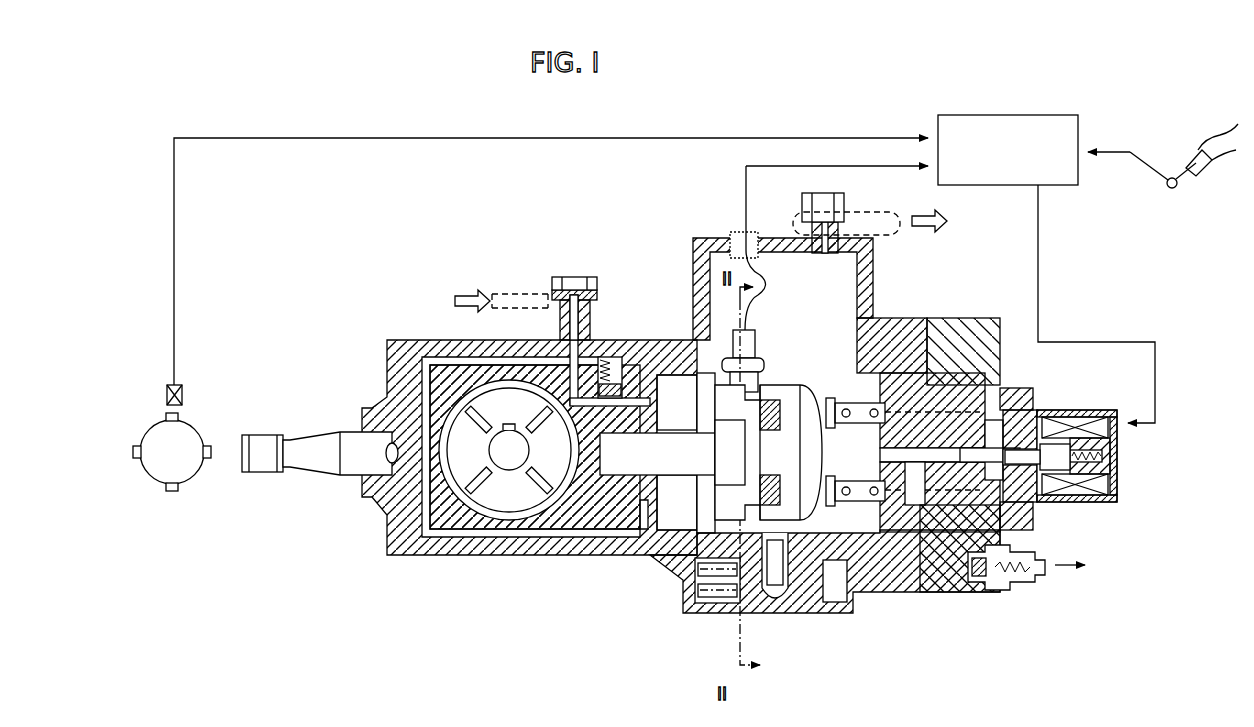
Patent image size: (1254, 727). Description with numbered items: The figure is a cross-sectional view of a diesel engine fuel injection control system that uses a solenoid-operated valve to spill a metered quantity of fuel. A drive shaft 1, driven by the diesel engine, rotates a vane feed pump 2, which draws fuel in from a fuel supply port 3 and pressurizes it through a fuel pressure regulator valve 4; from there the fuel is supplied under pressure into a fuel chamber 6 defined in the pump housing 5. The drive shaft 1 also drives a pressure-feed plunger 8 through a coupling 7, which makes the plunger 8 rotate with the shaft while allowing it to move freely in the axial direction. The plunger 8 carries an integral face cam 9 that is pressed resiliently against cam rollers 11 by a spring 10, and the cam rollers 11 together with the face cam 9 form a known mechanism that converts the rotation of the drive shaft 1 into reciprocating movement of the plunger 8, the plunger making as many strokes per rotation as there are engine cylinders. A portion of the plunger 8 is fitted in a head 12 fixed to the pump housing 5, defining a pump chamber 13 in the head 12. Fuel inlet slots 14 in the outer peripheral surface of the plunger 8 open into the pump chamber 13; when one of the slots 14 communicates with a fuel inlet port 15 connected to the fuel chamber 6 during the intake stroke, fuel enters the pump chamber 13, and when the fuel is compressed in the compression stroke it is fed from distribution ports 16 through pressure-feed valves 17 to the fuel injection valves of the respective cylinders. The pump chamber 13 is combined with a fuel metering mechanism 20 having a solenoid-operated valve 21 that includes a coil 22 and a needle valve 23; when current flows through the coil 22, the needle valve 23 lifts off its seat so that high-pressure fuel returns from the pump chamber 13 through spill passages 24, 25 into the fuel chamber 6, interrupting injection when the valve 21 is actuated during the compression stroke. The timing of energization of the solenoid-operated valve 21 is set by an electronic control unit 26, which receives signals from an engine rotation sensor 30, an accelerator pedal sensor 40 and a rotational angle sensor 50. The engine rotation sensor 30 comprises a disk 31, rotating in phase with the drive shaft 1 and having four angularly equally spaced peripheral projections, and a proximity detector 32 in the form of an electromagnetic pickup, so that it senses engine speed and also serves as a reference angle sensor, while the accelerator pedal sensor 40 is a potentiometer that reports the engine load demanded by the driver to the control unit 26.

The drive shaft 1 is at (330, 465).
The vane feed pump 2 is at (517, 502).
The fuel supply port 3 is at (525, 297).
The fuel pressure regulator valve 4 is at (612, 358).
The pump housing 5 is at (905, 585).
The fuel chamber 6 is at (845, 283).
The coupling 7 is at (773, 450).
The pressure-feed plunger 8 is at (850, 422).
The face cam 9 is at (817, 600).
The spring 10 is at (868, 500).
The cam rollers 11 is at (780, 605).
The head 12 is at (957, 330).
The pump chamber 13 is at (1030, 410).
The fuel inlet slots 14 is at (950, 495).
The fuel inlet port 15 is at (985, 432).
The distribution ports 16 is at (920, 525).
The pressure-feed valves 17 is at (1013, 588).
The fuel metering mechanism 20 is at (1093, 451).
The solenoid-operated valve 21 is at (1108, 496).
The coil 22 is at (1068, 494).
The needle valve 23 is at (1115, 412).
The spill passage 24 is at (1068, 442).
The spill passage 25 is at (912, 415).
The electronic control unit 26 is at (998, 125).
The engine rotation sensor 30 is at (183, 442).
The disk 31 is at (190, 480).
The proximity detector 32 is at (167, 395).
The accelerator pedal sensor 40 is at (1172, 186).
The rotational angle sensor 50 is at (715, 332).